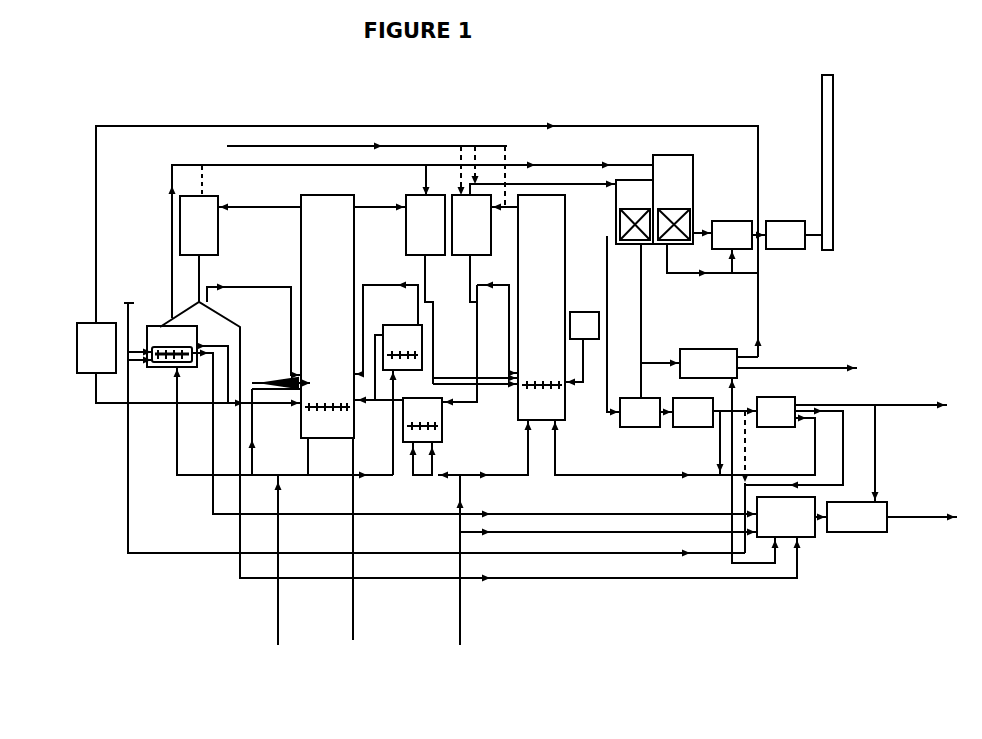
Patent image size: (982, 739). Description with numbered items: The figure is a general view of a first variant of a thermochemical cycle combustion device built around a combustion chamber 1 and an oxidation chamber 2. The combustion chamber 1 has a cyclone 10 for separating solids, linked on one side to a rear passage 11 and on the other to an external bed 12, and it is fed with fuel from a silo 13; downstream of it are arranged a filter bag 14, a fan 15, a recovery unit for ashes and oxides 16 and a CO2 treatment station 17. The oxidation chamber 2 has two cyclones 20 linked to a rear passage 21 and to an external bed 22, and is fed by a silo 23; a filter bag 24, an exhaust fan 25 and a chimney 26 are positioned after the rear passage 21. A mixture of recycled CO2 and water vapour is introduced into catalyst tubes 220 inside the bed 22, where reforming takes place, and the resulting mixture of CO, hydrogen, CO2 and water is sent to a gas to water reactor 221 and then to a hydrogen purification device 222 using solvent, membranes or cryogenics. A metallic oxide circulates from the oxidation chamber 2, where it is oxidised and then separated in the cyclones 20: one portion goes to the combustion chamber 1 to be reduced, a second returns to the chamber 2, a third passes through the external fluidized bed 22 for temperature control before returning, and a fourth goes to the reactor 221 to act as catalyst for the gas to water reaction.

The combustion chamber 1 is at (541, 307).
The oxidation chamber 2 is at (327, 316).
The cyclone 10 is at (471, 225).
The rear passage 11 is at (634, 212).
The external bed 12 is at (422, 420).
The silo 13 is at (584, 325).
The filter bag 14 is at (640, 412).
The fan 15 is at (693, 412).
The recovery unit for ashes and oxides 16 is at (708, 363).
The CO2 treatment station 17 is at (776, 412).
The cyclones 20 is at (312, 225).
The rear passage 21 is at (673, 199).
The external bed 22 is at (284, 347).
The silo 23 is at (96, 348).
The filter bag 24 is at (732, 235).
The exhaust fan 25 is at (785, 235).
The chimney 26 is at (828, 117).
The catalyst tubes 220 is at (152, 357).
The gas to water reactor 221 is at (786, 517).
The hydrogen purification device 222 is at (857, 517).